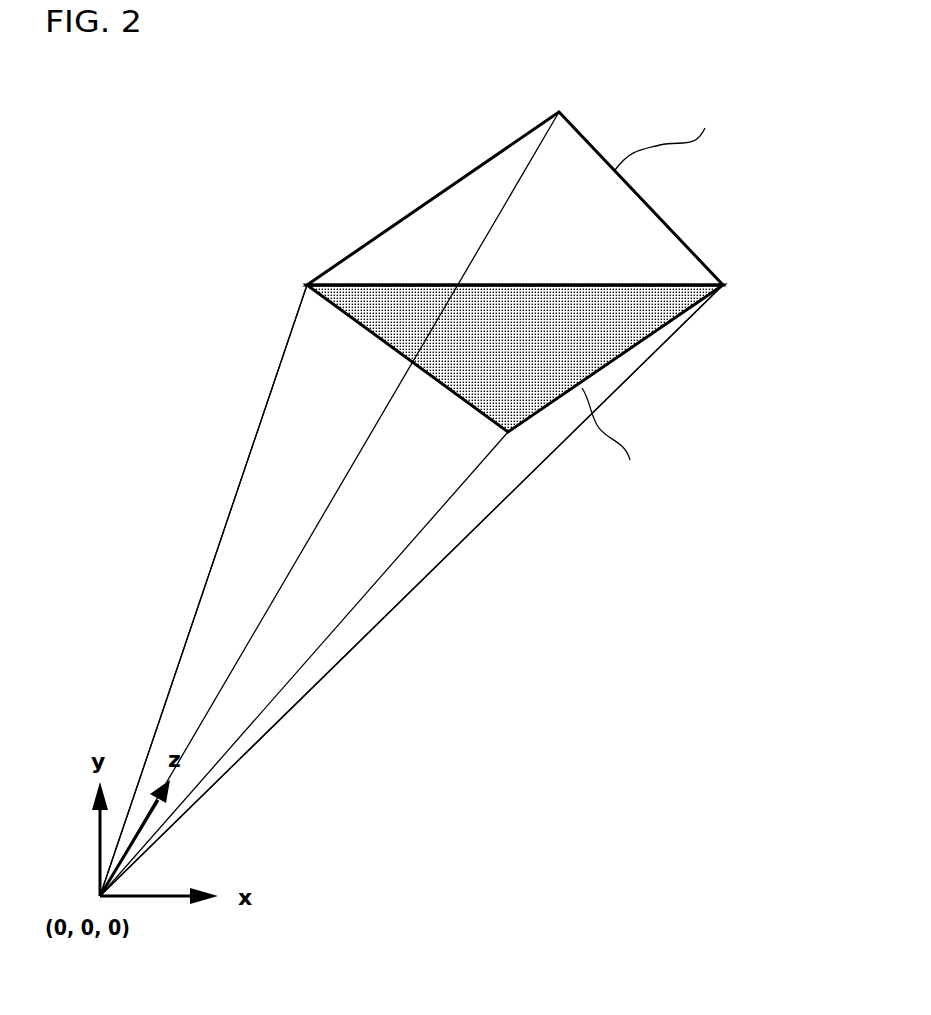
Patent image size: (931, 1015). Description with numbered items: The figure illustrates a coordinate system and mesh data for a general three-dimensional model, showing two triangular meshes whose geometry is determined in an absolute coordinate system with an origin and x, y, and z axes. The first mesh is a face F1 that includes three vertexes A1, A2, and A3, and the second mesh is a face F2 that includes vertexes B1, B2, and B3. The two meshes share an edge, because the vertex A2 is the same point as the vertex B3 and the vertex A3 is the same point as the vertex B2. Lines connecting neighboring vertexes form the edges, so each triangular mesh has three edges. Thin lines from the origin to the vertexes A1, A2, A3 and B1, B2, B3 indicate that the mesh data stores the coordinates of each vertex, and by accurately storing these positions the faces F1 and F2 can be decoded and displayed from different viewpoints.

The vertex A1 is at (337, 482).
The vertex A2 is at (203, 574).
The vertex A3 is at (432, 569).
The vertex B1 is at (312, 664).
The vertex B2 is at (432, 590).
The vertex B3 is at (203, 590).
The face F1 is at (633, 227).
The face F2 is at (615, 338).